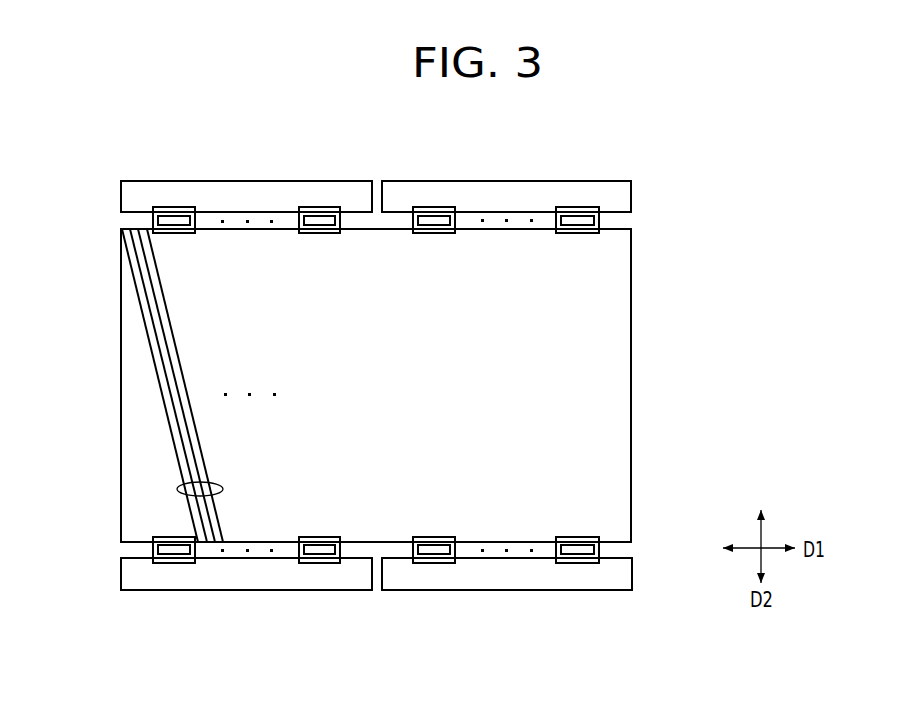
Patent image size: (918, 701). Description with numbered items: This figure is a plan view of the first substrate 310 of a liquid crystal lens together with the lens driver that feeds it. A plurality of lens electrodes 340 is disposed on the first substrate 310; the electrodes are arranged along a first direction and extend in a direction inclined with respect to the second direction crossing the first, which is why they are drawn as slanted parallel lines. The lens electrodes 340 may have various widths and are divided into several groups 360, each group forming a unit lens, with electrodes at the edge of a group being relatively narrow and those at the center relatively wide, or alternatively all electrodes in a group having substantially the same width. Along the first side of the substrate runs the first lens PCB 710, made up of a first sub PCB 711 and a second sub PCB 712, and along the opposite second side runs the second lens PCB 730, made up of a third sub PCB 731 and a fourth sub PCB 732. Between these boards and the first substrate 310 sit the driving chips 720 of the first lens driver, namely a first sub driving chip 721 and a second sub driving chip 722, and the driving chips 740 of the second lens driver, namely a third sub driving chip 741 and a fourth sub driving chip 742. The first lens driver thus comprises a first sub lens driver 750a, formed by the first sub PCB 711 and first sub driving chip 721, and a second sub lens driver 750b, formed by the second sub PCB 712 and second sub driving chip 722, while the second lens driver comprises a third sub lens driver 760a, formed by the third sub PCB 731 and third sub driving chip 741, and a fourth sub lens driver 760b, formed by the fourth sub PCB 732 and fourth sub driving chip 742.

The first substrate 310 is at (623, 386).
The lens electrodes 340 is at (138, 298).
The group of lens electrodes 360 is at (184, 484).
The first lens PCB 710 is at (375, 154).
The first sub PCB 711 is at (333, 193).
The second sub PCB 712 is at (506, 171).
The driving chips of the first lens driver 720 is at (376, 263).
The first sub driving chip 721 is at (322, 232).
The second sub driving chip 722 is at (434, 248).
The second lens PCB 730 is at (375, 619).
The third sub PCB 731 is at (333, 580).
The fourth sub PCB 732 is at (507, 601).
The driving chips of the second lens driver 740 is at (425, 507).
The third sub driving chip 741 is at (321, 545).
The fourth sub driving chip 742 is at (434, 523).
The first sub lens driver 750a is at (207, 171).
The second sub lens driver 750b is at (545, 171).
The third sub lens driver 760a is at (207, 601).
The fourth sub lens driver 760b is at (545, 601).